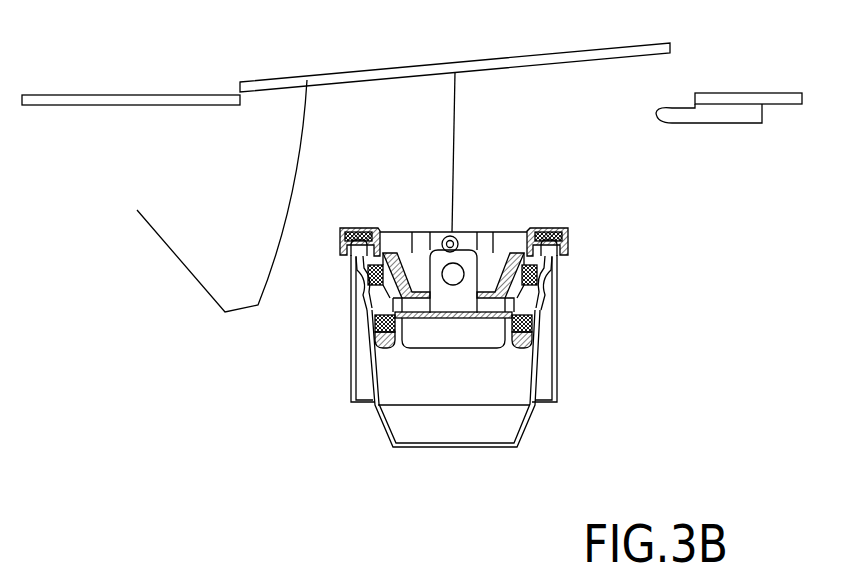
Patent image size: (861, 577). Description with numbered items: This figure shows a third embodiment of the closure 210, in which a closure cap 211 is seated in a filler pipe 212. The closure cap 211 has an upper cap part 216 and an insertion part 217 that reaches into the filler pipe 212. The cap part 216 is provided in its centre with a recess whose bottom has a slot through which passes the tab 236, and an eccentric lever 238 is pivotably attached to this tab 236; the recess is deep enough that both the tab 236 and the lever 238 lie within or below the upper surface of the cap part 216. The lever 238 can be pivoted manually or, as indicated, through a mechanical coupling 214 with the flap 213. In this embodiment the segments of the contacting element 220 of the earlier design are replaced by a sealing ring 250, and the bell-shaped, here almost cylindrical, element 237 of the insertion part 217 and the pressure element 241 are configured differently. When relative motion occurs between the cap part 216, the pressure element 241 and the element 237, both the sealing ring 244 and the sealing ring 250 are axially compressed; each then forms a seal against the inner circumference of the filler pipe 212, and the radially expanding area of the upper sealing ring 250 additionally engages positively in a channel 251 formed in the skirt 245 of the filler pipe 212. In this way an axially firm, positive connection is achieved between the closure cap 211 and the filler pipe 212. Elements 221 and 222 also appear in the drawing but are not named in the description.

The closure 210 is at (745, 232).
The closure cap 211 is at (604, 192).
The filler pipe 212 is at (561, 381).
The flap 213 is at (671, 48).
The mechanical coupling 214 is at (453, 152).
The cap part 216 is at (350, 228).
The insertion part 217 is at (390, 349).
The contacting element 220 is at (374, 264).
The right retaining hook 221 is at (558, 226).
The seal ring 222 is at (538, 275).
The tab 236 is at (448, 298).
The bell-shaped element 237 is at (513, 300).
The eccentric lever 238 is at (473, 253).
The pressure element 241 is at (530, 297).
The sealing ring 244 is at (377, 322).
The skirt 245 is at (376, 424).
The sealing ring 250 is at (553, 258).
The channel 251 is at (371, 280).